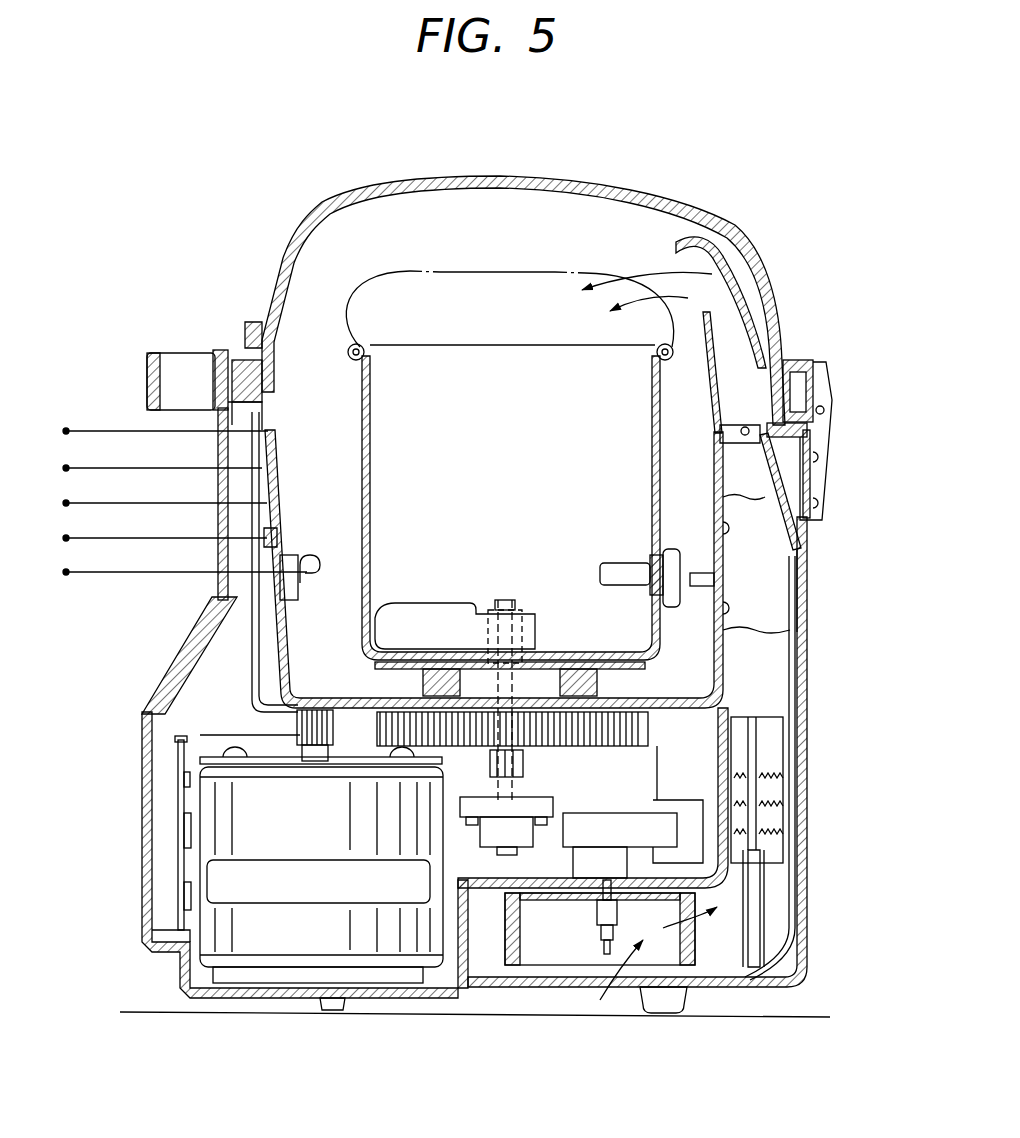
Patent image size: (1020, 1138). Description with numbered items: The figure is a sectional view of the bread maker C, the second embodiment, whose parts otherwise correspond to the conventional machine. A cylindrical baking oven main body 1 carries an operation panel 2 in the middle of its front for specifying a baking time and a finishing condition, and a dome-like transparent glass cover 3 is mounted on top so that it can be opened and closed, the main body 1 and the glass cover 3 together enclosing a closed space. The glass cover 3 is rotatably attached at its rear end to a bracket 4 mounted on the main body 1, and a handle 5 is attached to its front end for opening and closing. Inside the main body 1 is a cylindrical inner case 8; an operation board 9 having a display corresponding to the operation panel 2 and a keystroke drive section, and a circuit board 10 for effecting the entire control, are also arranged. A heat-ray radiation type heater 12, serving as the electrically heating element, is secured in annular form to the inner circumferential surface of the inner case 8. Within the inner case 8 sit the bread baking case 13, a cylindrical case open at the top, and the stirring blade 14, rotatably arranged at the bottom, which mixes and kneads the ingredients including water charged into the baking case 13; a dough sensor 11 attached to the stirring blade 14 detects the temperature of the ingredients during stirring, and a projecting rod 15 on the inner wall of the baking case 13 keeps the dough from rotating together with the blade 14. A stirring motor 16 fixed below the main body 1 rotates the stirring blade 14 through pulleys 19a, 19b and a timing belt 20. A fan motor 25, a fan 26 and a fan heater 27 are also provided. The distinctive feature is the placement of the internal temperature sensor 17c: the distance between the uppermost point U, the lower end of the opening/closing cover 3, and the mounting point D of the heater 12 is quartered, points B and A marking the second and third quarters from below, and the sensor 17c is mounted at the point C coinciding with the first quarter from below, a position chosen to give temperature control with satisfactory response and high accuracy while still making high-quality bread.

The baking oven main body 1 is at (142, 752).
The operation panel 2 is at (170, 668).
The glass cover 3 is at (300, 238).
The bracket 4 is at (832, 432).
The handle 5 is at (188, 352).
The inner case 8 is at (722, 463).
The operation board 9 is at (212, 597).
The circuit board 10 is at (177, 847).
The dough sensor 11 is at (505, 600).
The heat-ray radiation type heater 12 is at (303, 556).
The bread baking case 13 is at (372, 446).
The stirring blade 14 is at (440, 602).
The projecting rod 15 is at (620, 562).
The stirring motor 16 is at (217, 947).
The internal temperature sensor 17c is at (272, 530).
The pulley 19a is at (295, 720).
The pulley 19b is at (585, 742).
The timing belt 20 is at (346, 703).
The fan motor 25 is at (583, 823).
The fan 26 is at (570, 960).
The fan heater 27 is at (765, 787).
The bread maker / point C is at (478, 172).
The uppermost point U is at (155, 432).
The point A is at (152, 469).
The point B is at (155, 504).
The mounting point of the heater D is at (175, 573).